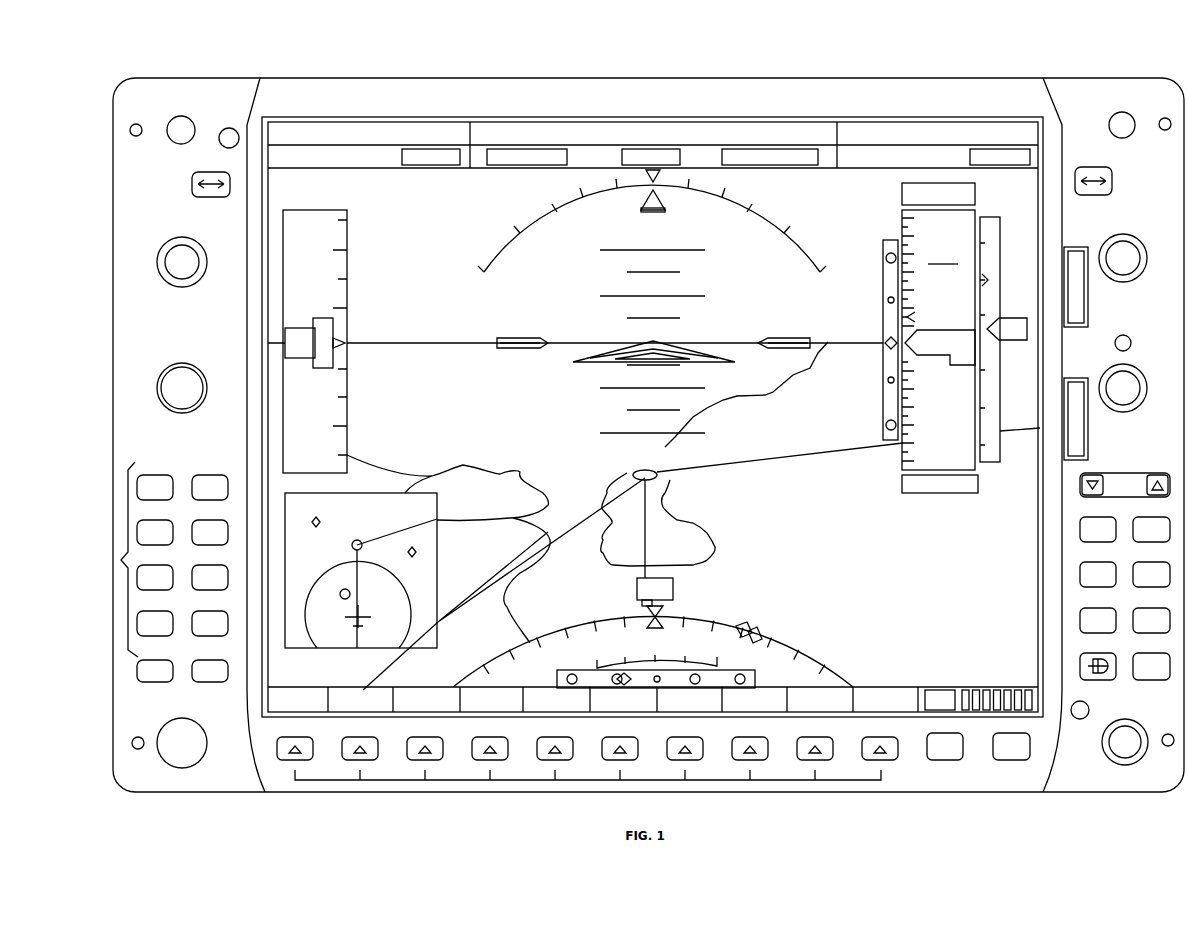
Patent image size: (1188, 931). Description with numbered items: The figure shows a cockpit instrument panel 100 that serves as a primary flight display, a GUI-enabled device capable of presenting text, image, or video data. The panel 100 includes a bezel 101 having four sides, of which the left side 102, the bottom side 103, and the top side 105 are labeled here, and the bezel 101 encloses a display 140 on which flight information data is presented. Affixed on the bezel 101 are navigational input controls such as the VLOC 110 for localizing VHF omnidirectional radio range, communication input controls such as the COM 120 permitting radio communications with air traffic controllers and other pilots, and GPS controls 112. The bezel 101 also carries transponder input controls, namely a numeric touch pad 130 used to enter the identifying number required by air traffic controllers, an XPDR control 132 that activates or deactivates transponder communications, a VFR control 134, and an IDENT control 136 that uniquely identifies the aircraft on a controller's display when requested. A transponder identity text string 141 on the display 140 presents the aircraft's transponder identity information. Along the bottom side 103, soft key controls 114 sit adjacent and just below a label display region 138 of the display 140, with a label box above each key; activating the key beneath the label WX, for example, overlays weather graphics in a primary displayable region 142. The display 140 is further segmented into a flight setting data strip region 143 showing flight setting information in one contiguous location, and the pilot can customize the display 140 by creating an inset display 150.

The cockpit instrument panel 100 is at (1002, 804).
The bezel 101 is at (838, 78).
The left side 102 is at (113, 437).
The bottom side 103 is at (808, 782).
The top side 105 is at (654, 78).
The VLOC 110 is at (1140, 276).
The GPS controls 112 is at (1126, 745).
The soft key controls 114 is at (458, 782).
The COM 120 is at (172, 286).
The numeric touch pad 130 is at (120, 560).
The XPDR control 132 is at (170, 762).
The VFR control 134 is at (157, 683).
The IDENT control 136 is at (208, 683).
The label display region 138 is at (882, 688).
The display 140 is at (851, 574).
The text string "1200 ALT IDT" 141 is at (360, 672).
The primary displayable region 142 is at (478, 409).
The flight setting data strip region 143 is at (402, 117).
The inset display 150 is at (374, 524).